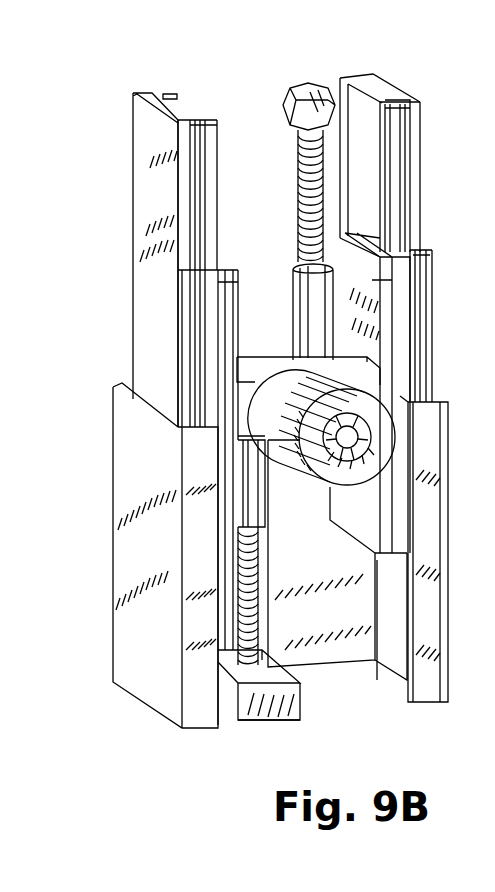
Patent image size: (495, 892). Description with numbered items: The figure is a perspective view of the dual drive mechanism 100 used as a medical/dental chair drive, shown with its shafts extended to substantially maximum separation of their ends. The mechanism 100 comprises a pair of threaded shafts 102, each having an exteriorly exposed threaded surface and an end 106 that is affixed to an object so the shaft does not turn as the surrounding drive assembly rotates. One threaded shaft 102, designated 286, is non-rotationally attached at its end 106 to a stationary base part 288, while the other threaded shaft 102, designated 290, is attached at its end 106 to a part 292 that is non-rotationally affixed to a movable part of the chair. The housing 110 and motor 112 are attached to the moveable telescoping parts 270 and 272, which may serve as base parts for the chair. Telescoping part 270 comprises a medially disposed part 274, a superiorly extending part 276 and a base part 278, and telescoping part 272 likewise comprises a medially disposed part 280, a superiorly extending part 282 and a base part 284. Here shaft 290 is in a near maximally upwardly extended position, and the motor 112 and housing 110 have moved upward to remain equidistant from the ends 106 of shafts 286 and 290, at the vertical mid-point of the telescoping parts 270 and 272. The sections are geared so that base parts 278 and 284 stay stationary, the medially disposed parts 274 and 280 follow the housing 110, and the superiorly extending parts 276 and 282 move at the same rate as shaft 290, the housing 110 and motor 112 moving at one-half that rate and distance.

The dual drive mechanism 100 is at (268, 316).
The threaded shaft 102 is at (352, 170).
The end 106 is at (362, 80).
The housing 110 is at (363, 384).
The motor 112 is at (318, 467).
The telescoping part 270 is at (147, 343).
The telescoping part 272 is at (435, 305).
The medially disposed part 274 is at (215, 261).
The superiorly extending part 276 is at (143, 185).
The base part 278 is at (139, 643).
The medially disposed part 280 is at (432, 263).
The superiorly extending part 282 is at (422, 196).
The base part 284 is at (447, 690).
The threaded shaft 286 is at (261, 650).
The stationary base part 288 is at (265, 720).
The threaded shaft 290 is at (298, 180).
The part 292 is at (300, 85).